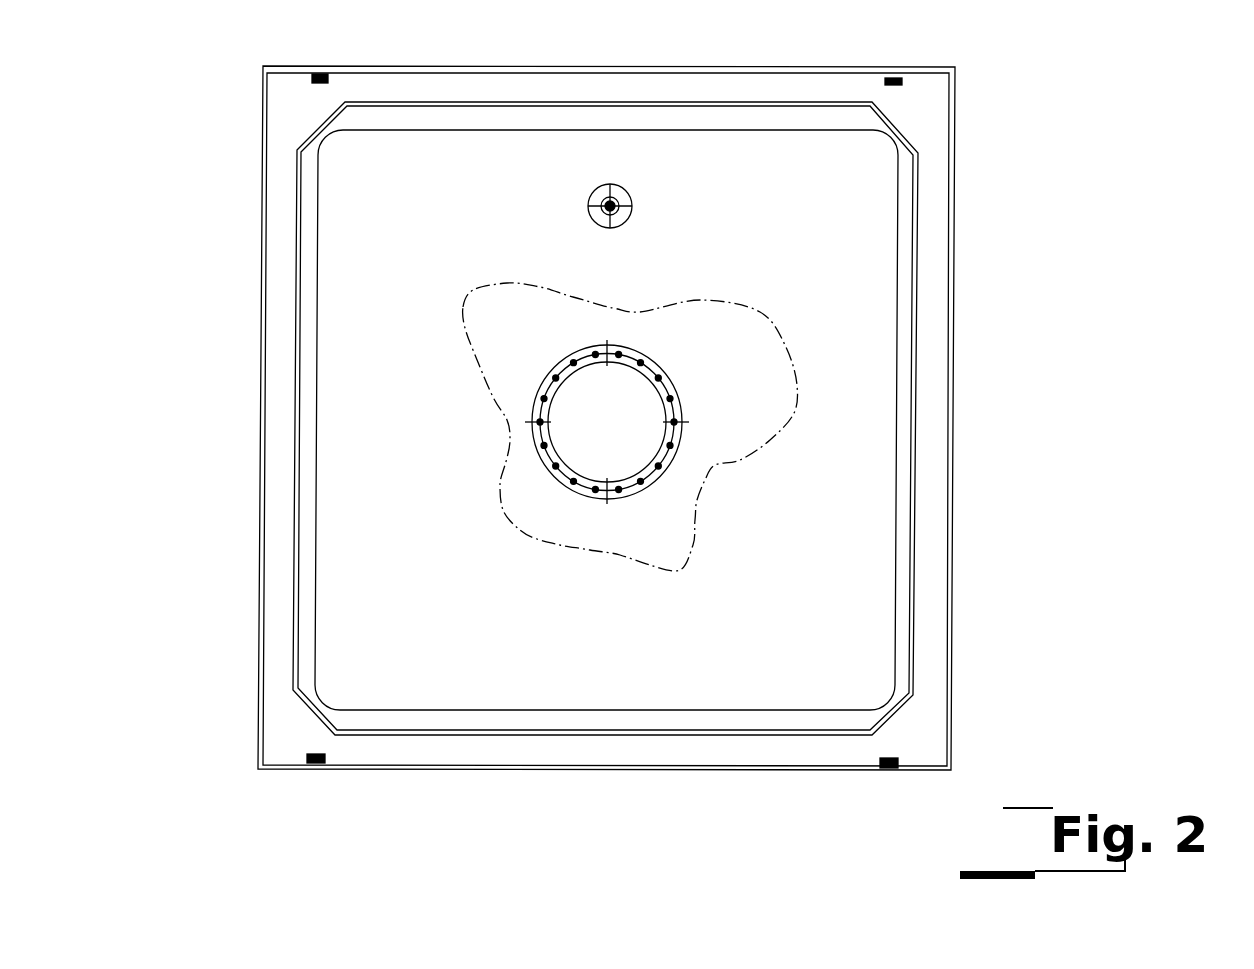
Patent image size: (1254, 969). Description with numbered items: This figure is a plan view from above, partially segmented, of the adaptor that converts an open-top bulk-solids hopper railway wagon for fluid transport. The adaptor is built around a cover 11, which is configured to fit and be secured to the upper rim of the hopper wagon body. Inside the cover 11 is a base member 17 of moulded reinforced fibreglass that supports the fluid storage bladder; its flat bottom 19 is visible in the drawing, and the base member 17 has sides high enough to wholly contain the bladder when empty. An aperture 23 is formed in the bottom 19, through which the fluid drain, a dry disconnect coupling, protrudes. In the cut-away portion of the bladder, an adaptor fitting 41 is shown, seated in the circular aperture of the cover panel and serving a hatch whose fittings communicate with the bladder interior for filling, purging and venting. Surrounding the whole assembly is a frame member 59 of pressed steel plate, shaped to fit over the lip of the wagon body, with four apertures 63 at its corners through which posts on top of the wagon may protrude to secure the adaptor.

The cover 11 is at (1150, 172).
The base member 17 is at (892, 527).
The flat bottom 19 is at (768, 596).
The aperture 23 is at (626, 221).
The adaptor fitting 41 is at (655, 365).
The frame member 59 is at (278, 497).
The apertures 63 is at (316, 82).